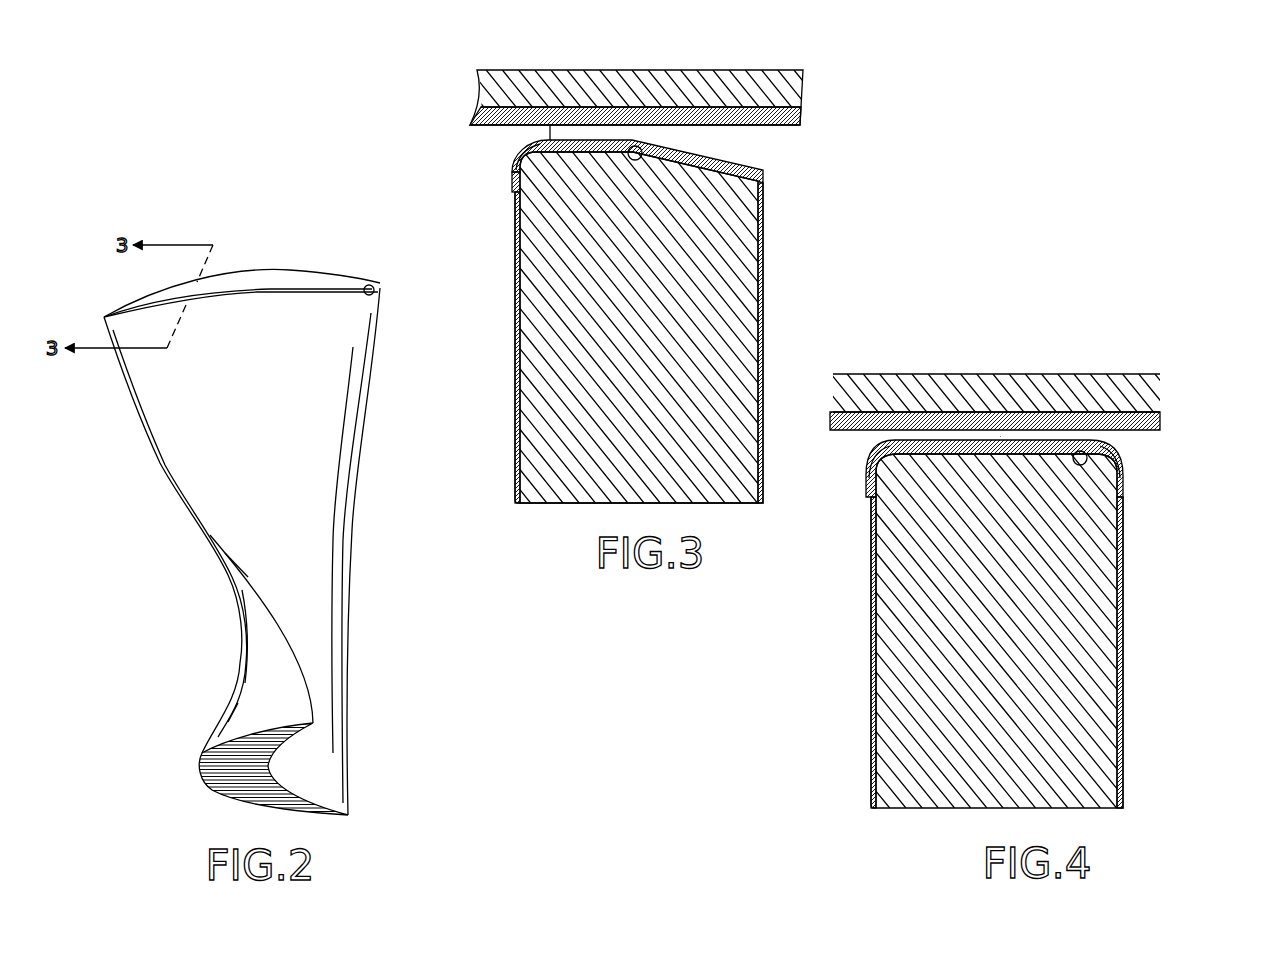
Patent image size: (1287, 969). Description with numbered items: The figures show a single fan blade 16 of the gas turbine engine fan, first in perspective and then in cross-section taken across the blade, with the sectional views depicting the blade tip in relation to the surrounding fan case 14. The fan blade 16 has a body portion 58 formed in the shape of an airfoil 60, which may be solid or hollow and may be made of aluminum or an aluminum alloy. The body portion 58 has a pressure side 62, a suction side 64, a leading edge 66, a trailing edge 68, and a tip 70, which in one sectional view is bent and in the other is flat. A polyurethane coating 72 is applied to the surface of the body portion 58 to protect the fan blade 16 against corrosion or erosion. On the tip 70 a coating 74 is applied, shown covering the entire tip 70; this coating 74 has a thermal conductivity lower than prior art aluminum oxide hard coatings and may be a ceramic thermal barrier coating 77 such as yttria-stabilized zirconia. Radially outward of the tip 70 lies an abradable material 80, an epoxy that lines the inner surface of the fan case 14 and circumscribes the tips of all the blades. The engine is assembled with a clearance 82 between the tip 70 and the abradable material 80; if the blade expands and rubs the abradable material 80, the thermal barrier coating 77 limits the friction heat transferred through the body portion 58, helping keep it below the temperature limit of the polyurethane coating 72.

In FIG. 3, the fan case 14 is at (626, 73).
In FIG. 4, the fan case 14 is at (1031, 392).
In FIG. 2, the fan blade 16 is at (249, 498).
In FIG. 3, the fan blade 16 is at (643, 314).
In FIG. 4, the fan blade 16 is at (938, 620).
In FIG. 2, the body portion 58 is at (170, 427).
In FIG. 3, the body portion 58 is at (740, 315).
In FIG. 4, the body portion 58 is at (1095, 648).
In FIG. 2, the airfoil 60 is at (187, 465).
In FIG. 2, the pressure side 62 is at (303, 433).
In FIG. 2, the suction side 64 is at (240, 637).
In FIG. 2, the leading edge 66 is at (350, 520).
In FIG. 2, the trailing edge 68 is at (192, 512).
In FIG. 2, the tip 70 is at (380, 288).
In FIG. 3, the tip 70 is at (640, 157).
In FIG. 4, the tip 70 is at (1082, 462).
In FIG. 3, the polyurethane coating 72 is at (518, 296).
In FIG. 4, the polyurethane coating 72 is at (1120, 713).
In FIG. 3, the coating 74 is at (512, 172).
In FIG. 4, the coating 74 is at (868, 473).
In FIG. 3, the thermal barrier coating 77 is at (512, 180).
In FIG. 4, the thermal barrier coating 77 is at (1123, 477).
In FIG. 3, the abradable material 80 is at (798, 117).
In FIG. 4, the abradable material 80 is at (1152, 422).
In FIG. 3, the clearance 82 is at (545, 135).
In FIG. 4, the clearance 82 is at (927, 436).